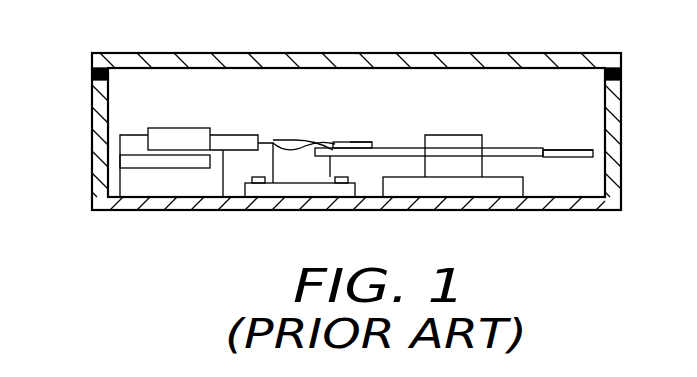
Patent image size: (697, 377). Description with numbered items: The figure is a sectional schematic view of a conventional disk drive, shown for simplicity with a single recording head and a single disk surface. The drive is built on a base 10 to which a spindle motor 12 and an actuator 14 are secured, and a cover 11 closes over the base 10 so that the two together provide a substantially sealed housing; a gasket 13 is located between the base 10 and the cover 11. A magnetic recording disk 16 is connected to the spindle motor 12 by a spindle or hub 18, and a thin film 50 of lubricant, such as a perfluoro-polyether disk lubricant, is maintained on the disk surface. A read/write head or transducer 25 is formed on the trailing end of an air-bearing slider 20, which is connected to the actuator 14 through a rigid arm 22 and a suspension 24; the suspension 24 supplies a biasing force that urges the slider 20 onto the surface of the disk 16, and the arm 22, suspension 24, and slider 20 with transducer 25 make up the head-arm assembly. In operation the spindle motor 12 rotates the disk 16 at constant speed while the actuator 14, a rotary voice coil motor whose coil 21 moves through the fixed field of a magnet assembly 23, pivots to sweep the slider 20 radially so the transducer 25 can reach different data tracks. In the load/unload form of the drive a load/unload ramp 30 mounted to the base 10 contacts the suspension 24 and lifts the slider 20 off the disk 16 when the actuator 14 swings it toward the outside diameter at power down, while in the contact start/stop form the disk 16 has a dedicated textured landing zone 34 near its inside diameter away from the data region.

The base 10 is at (557, 203).
The cover 11 is at (113, 60).
The spindle motor 12 is at (463, 187).
The gasket 13 is at (623, 68).
The actuator 14 is at (163, 188).
The magnetic recording disk 16 is at (607, 153).
The spindle or hub 18 is at (452, 135).
The air-bearing slider 20 is at (365, 142).
The coil 21 is at (152, 132).
The rigid arm 22 is at (232, 135).
The magnet assembly 23 is at (130, 162).
The suspension 24 is at (272, 137).
The read/write head or transducer 25 is at (332, 141).
The load/unload ramp 30 is at (302, 137).
The textured landing zone 34 is at (505, 147).
The thin film of lubricant 50 is at (560, 149).